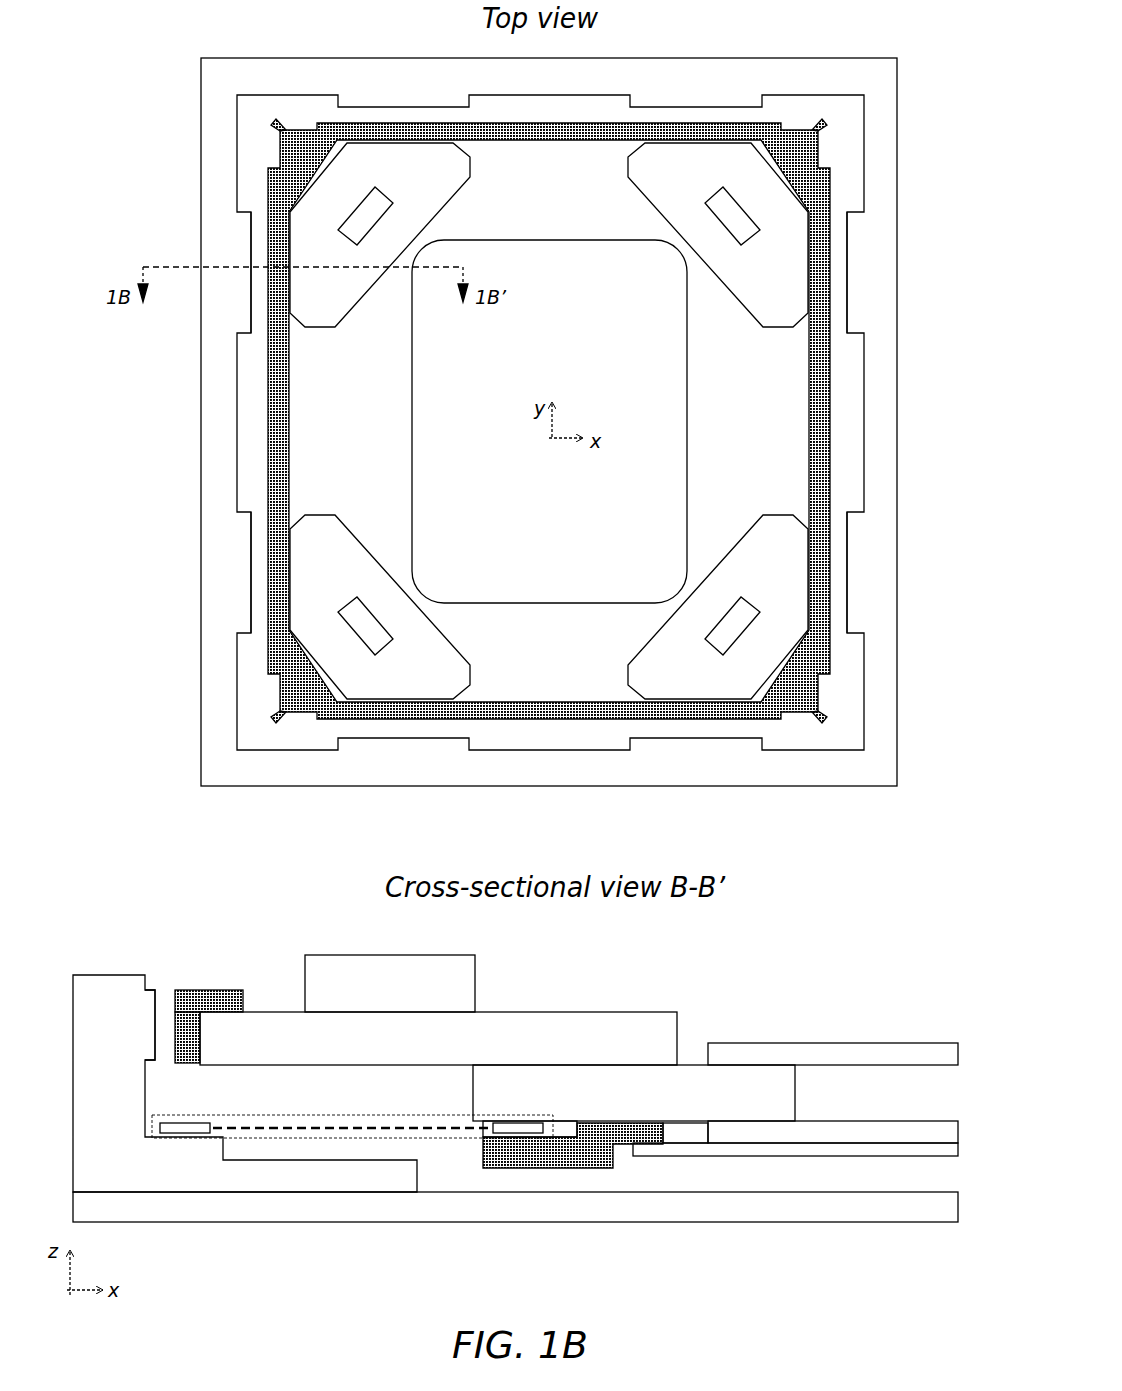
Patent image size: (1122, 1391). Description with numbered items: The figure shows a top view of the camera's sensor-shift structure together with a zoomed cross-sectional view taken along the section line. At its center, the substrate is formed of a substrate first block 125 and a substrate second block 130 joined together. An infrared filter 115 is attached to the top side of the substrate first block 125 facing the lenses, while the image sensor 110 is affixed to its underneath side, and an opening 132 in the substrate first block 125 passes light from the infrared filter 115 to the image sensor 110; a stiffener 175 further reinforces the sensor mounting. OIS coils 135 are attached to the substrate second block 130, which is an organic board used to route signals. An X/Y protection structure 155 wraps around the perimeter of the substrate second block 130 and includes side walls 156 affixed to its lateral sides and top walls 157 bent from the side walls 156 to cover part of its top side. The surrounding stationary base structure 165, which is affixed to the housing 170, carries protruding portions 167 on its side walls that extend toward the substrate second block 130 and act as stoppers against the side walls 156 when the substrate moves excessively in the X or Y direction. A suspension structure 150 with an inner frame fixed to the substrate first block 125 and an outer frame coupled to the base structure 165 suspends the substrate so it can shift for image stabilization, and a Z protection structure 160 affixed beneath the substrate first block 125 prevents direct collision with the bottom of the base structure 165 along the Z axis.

The X/Y protection structure 155 is at (278, 190).
The OIS coils 135 is at (428, 210).
The opening 132 is at (549, 421).
The substrate second block 130 is at (438, 719).
The portions 167 is at (147, 1010).
The base structure 165 is at (220, 731).
The top walls 157 is at (238, 996).
The side walls 156 is at (187, 1046).
The substrate first block 125 is at (634, 1093).
The infrared filter 115 is at (827, 1048).
The image sensor 110 is at (826, 1133).
The stiffener 175 is at (728, 1152).
The Z protection structure 160 is at (597, 1170).
The suspension structure 150 is at (453, 1140).
The housing 170 is at (261, 1207).